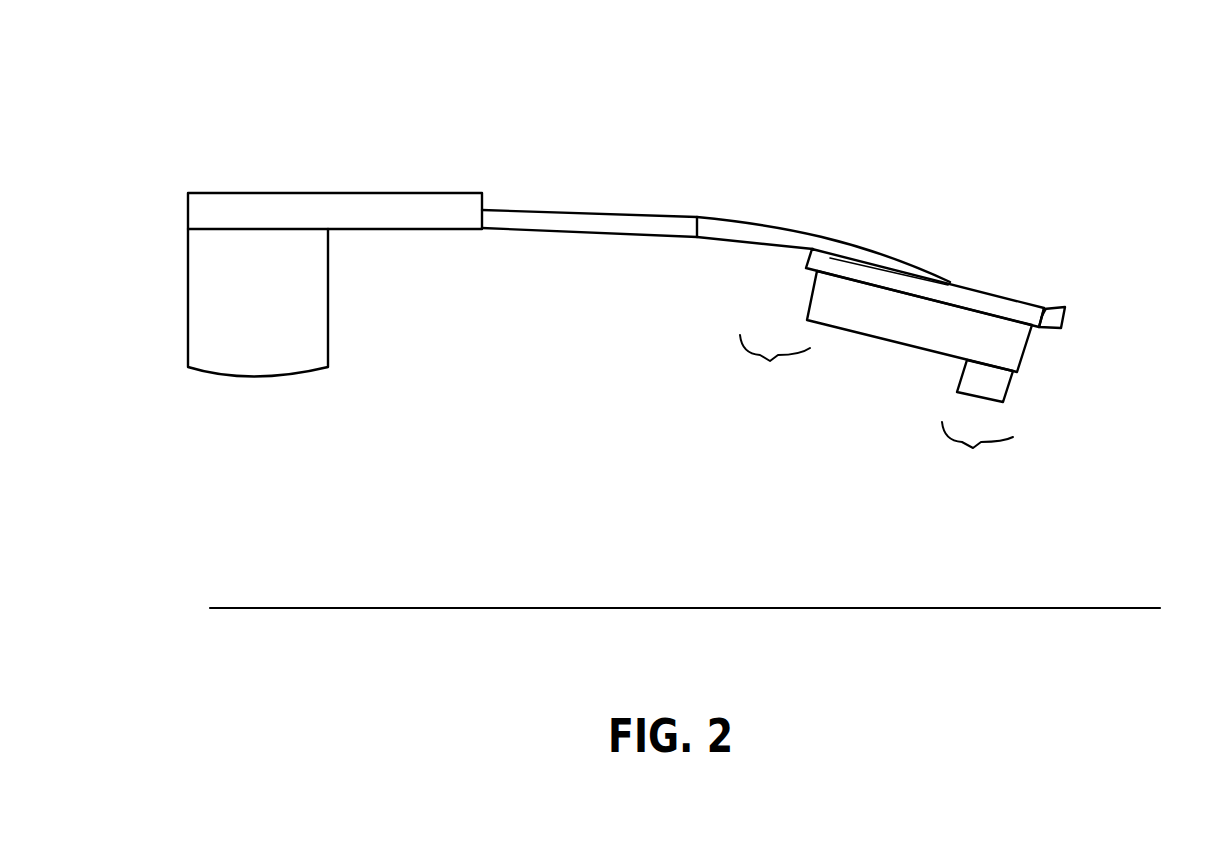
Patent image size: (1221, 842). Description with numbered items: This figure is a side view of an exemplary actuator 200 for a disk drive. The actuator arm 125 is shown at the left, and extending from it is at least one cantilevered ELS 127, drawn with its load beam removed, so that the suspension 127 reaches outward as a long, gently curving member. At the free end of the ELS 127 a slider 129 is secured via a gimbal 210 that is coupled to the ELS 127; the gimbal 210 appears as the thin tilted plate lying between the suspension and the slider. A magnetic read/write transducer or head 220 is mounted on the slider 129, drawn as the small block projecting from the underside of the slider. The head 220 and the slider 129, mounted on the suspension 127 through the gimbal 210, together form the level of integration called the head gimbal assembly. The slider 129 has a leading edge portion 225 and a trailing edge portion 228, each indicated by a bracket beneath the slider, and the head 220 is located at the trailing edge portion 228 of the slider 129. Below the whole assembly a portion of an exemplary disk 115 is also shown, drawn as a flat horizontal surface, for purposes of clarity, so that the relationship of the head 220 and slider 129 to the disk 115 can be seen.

The actuator 200 is at (613, 63).
The actuator arm 125 is at (325, 193).
The ELS 127 is at (697, 218).
The slider 129 is at (1008, 340).
The gimbal 210 is at (1046, 310).
The head 220 is at (1007, 390).
The leading edge portion 225 is at (775, 366).
The trailing edge portion 228 is at (977, 456).
The disk 115 is at (528, 608).